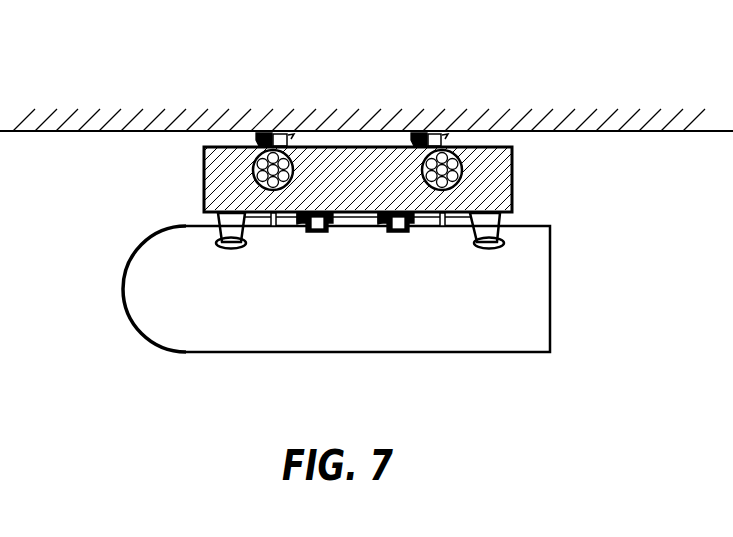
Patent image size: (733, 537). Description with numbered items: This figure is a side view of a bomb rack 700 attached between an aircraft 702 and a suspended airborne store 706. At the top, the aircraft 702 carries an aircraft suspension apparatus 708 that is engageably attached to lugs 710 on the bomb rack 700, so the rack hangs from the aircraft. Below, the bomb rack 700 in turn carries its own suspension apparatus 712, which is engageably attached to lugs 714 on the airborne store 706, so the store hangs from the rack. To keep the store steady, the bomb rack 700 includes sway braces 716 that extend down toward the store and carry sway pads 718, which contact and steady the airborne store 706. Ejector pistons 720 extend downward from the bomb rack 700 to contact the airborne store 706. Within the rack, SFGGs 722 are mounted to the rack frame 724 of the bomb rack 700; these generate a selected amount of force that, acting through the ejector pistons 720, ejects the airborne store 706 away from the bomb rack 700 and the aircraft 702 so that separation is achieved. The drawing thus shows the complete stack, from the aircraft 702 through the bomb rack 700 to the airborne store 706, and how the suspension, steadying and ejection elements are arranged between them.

The bomb rack 700 is at (514, 147).
The aircraft 702 is at (603, 133).
The airborne store 706 is at (208, 352).
The aircraft suspension apparatus 708 is at (262, 140).
The lugs 710 is at (283, 134).
The suspension apparatus 712 is at (304, 220).
The lugs 714 is at (318, 232).
The sway braces 716 is at (217, 217).
The sway pads 718 is at (232, 248).
The ejector pistons 720 is at (273, 226).
The SFGGs 722 is at (254, 168).
The rack frame 724 is at (205, 149).